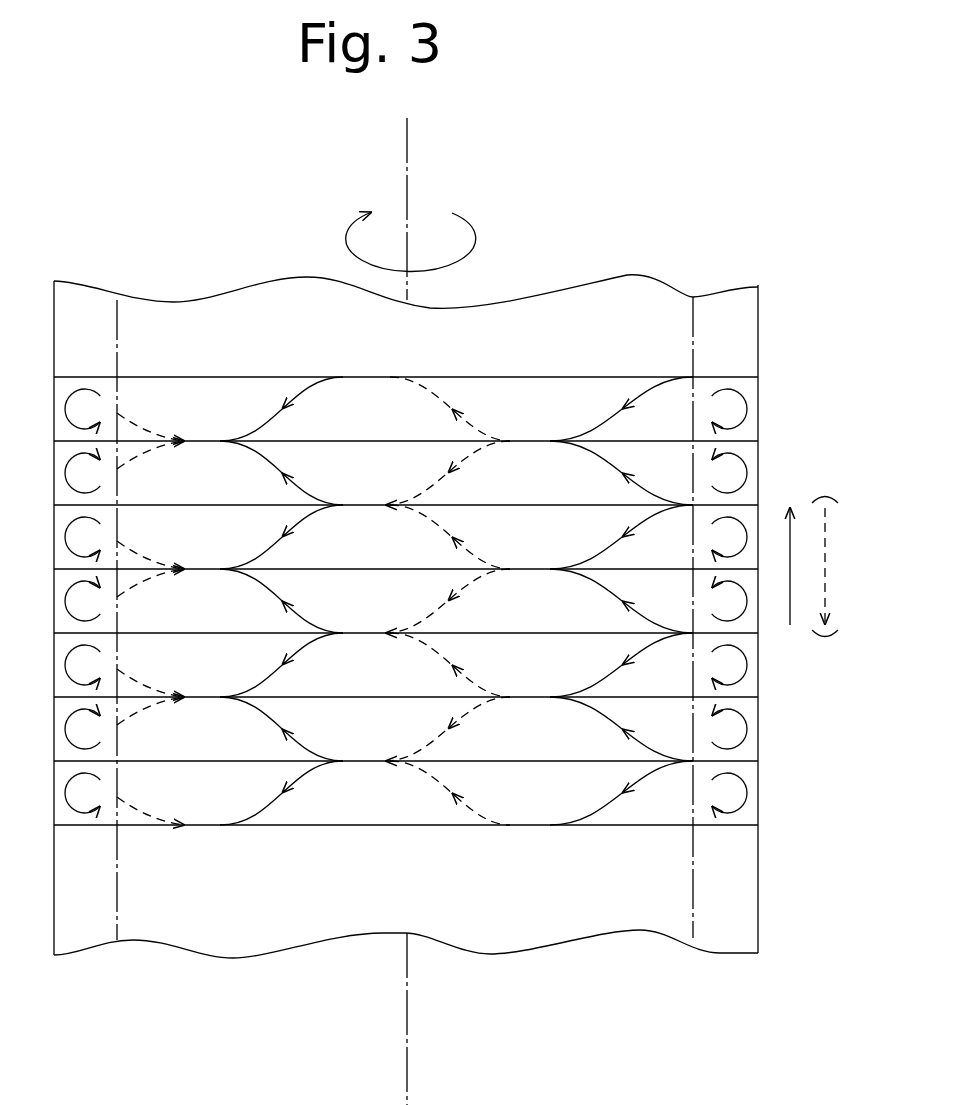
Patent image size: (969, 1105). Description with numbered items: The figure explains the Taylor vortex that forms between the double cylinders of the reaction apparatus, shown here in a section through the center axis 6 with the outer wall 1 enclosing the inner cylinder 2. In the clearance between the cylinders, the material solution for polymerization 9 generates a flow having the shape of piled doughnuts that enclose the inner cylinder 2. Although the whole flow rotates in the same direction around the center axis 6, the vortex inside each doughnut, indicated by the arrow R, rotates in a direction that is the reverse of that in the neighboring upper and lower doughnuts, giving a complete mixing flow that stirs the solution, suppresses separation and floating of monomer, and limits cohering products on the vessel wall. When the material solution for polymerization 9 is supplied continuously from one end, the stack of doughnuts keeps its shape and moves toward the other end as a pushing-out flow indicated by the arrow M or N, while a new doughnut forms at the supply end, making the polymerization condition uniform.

The vessel 1 is at (757, 290).
The inner cylinder 2 is at (592, 303).
The center axis 6 is at (408, 145).
The material solution for polymerization 9 is at (500, 397).
The arrow showing rotation of vortices R is at (645, 378).
The arrow indicating pushing-out flow M is at (793, 545).
The arrow indicating pushing-out flow N is at (837, 567).